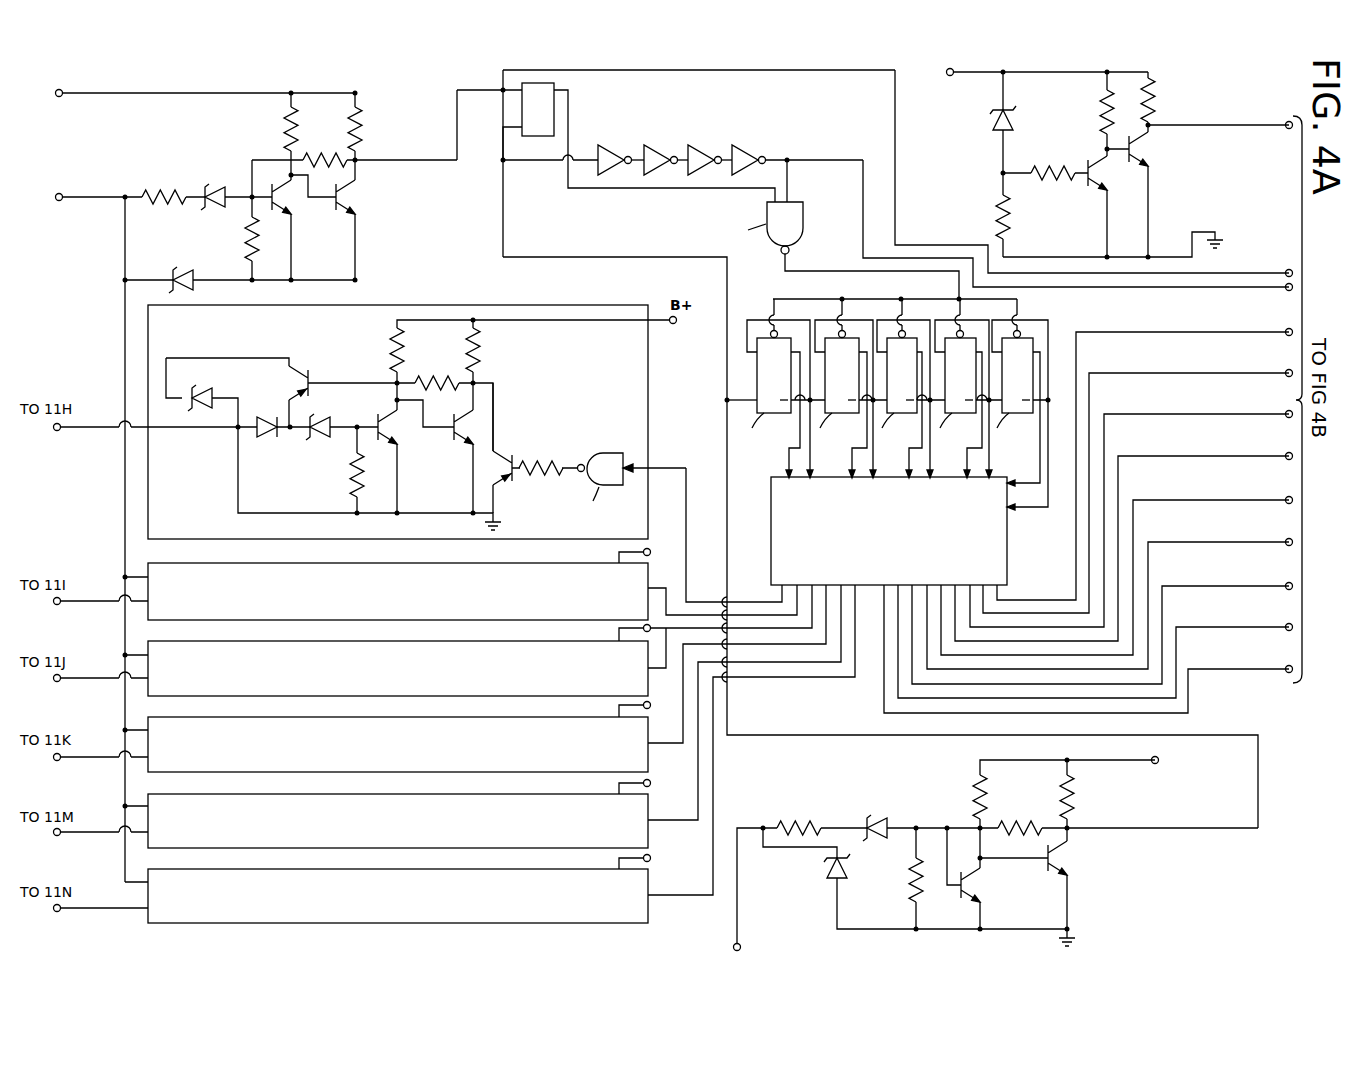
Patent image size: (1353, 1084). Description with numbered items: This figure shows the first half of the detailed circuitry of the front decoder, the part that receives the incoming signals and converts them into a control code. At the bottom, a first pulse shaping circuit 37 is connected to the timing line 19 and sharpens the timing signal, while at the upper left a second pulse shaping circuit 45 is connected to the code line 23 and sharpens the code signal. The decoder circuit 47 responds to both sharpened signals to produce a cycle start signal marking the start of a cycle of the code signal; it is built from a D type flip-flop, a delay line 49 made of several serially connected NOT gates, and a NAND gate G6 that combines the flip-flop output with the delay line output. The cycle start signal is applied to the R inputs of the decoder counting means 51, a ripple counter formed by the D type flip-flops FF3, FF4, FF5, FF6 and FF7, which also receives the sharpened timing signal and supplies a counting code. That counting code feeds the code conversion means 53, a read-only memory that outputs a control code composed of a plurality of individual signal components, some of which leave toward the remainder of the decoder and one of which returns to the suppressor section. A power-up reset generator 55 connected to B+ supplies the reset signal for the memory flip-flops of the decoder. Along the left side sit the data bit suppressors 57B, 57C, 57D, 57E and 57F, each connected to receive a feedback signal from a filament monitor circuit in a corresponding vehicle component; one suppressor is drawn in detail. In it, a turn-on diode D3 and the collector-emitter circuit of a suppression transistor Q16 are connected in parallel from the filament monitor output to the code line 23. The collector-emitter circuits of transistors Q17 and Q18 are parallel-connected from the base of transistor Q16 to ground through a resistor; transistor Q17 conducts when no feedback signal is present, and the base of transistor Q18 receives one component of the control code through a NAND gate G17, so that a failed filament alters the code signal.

The timing line 19 is at (739, 916).
The code line 23 is at (107, 197).
The first pulse shaping circuit 37 is at (931, 852).
The second pulse shaping circuit 45 is at (245, 172).
The decoder circuit 47 is at (521, 110).
The delay line 49 is at (706, 143).
The decoder counting means 51 is at (874, 307).
The code conversion means 53 is at (1007, 565).
The power-up reset generator 55 is at (1061, 166).
The data bit suppressor 57B is at (452, 563).
The data bit suppressor 57C is at (452, 641).
The data bit suppressor 57D is at (452, 717).
The data bit suppressor 57E is at (452, 794).
The data bit suppressor 57F is at (452, 869).
The turn-on diode D3 is at (192, 386).
The suppression transistor Q16 is at (312, 370).
The transistor Q17 is at (478, 425).
The transistor Q18 is at (506, 452).
The NAND gate G6 is at (839, 229).
The NAND gate G17 is at (632, 485).
The D type flip-flop FF3 is at (786, 388).
The D type flip-flop FF4 is at (851, 388).
The D type flip-flop FF5 is at (911, 388).
The D type flip-flop FF6 is at (968, 388).
The D type flip-flop FF7 is at (1021, 404).